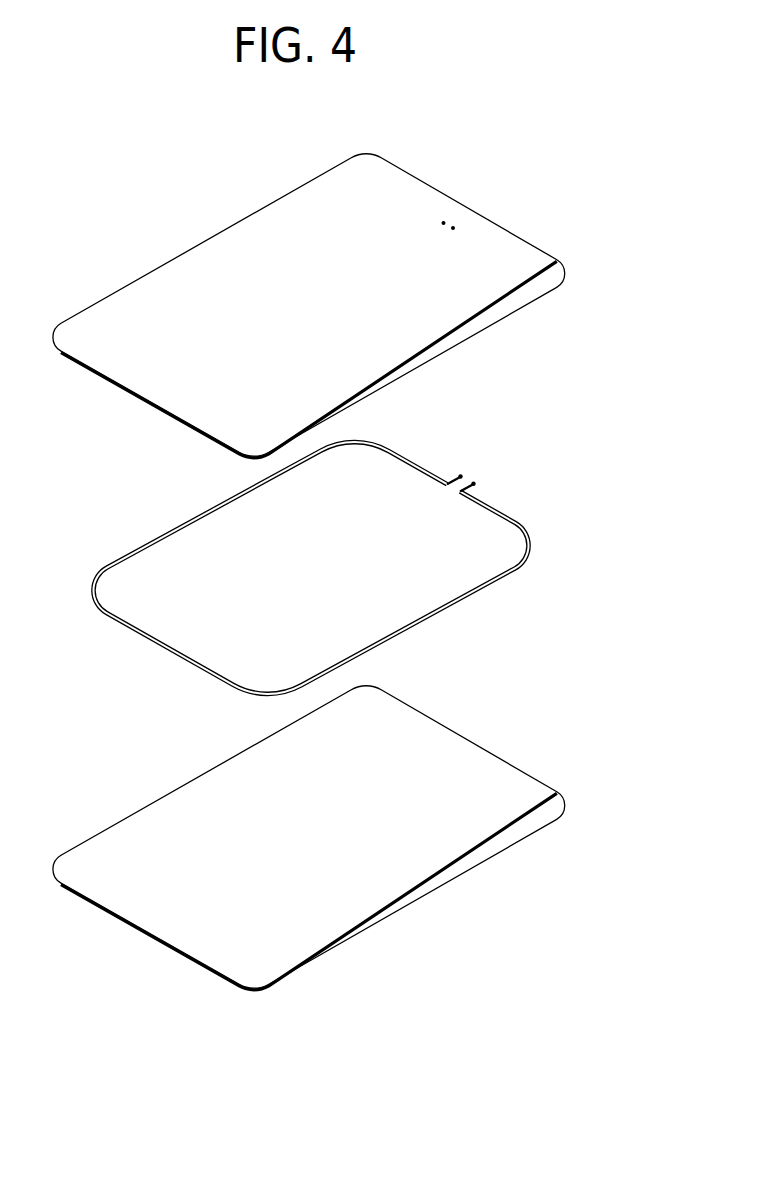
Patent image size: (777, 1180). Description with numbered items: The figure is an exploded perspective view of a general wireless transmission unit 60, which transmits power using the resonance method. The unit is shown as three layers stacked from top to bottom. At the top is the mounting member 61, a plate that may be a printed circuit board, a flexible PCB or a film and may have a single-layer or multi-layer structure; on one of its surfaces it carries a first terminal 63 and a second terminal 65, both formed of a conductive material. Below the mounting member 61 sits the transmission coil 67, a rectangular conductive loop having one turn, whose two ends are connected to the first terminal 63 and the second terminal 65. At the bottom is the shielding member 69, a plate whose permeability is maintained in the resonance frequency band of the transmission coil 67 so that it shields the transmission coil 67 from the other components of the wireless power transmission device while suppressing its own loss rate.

The wireless transmission unit 60 is at (76, 114).
The mounting member 61 is at (510, 245).
The first terminal 63 is at (453, 228).
The second terminal 65 is at (444, 223).
The transmission coil 67 is at (497, 508).
The shielding member 69 is at (510, 787).